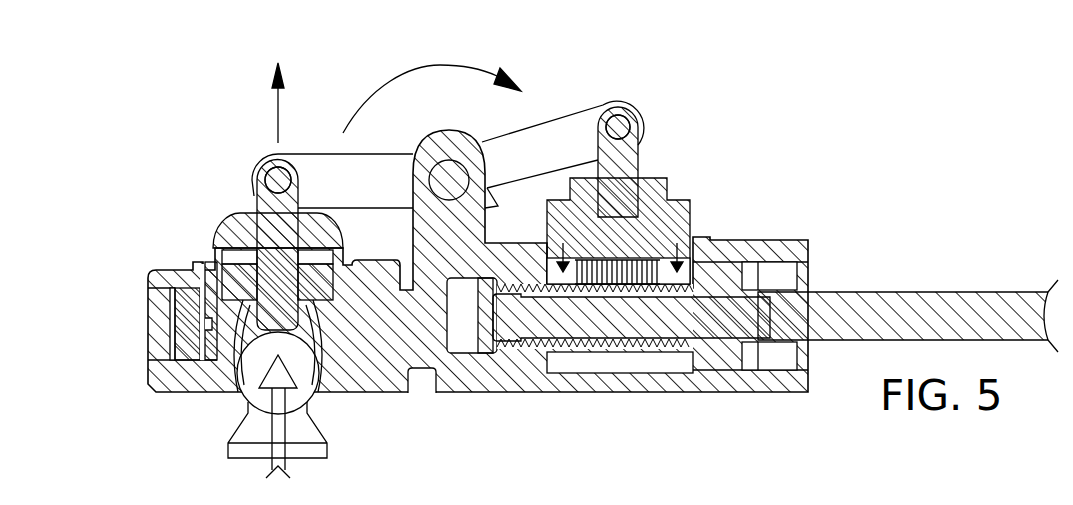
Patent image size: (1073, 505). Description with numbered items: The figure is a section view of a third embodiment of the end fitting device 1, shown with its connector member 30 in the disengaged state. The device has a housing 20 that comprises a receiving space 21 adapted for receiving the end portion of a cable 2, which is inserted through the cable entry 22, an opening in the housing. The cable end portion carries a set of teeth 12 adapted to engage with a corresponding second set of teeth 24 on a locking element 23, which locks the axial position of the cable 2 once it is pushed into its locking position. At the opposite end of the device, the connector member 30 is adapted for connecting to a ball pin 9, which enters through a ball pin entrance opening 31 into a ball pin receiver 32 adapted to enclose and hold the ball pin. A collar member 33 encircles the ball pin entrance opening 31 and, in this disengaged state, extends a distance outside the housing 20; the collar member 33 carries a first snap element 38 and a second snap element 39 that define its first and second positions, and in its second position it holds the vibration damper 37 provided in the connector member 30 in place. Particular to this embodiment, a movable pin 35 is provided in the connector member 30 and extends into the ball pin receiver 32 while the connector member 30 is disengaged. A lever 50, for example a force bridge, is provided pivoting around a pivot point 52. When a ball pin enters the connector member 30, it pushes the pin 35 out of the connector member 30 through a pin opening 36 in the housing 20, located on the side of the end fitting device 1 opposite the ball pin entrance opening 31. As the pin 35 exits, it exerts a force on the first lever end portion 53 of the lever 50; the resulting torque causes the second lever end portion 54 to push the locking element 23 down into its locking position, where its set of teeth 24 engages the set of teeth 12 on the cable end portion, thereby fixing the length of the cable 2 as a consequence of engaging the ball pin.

The end fitting device 1 is at (757, 100).
The cable 2 is at (930, 315).
The ball pin 9 is at (300, 377).
The set of teeth 12 is at (720, 347).
The housing 20 is at (492, 382).
The receiving space 21 is at (637, 373).
The cable entry 22 is at (780, 278).
The locking element 23 is at (698, 200).
The second set of teeth 24 is at (648, 286).
The connector member 30 is at (210, 427).
The ball pin entrance opening 31 is at (225, 398).
The ball pin receiver 32 is at (303, 322).
The collar member 33 is at (152, 386).
The movable pin 35 is at (250, 243).
The pin opening 36 is at (262, 192).
The vibration damper 37 is at (165, 338).
The first snap element 38 is at (210, 254).
The second snap element 39 is at (178, 312).
The lever 50 is at (618, 72).
The pivot point 52 is at (418, 150).
The first lever end portion 53 is at (313, 142).
The second lever end portion 54 is at (556, 135).